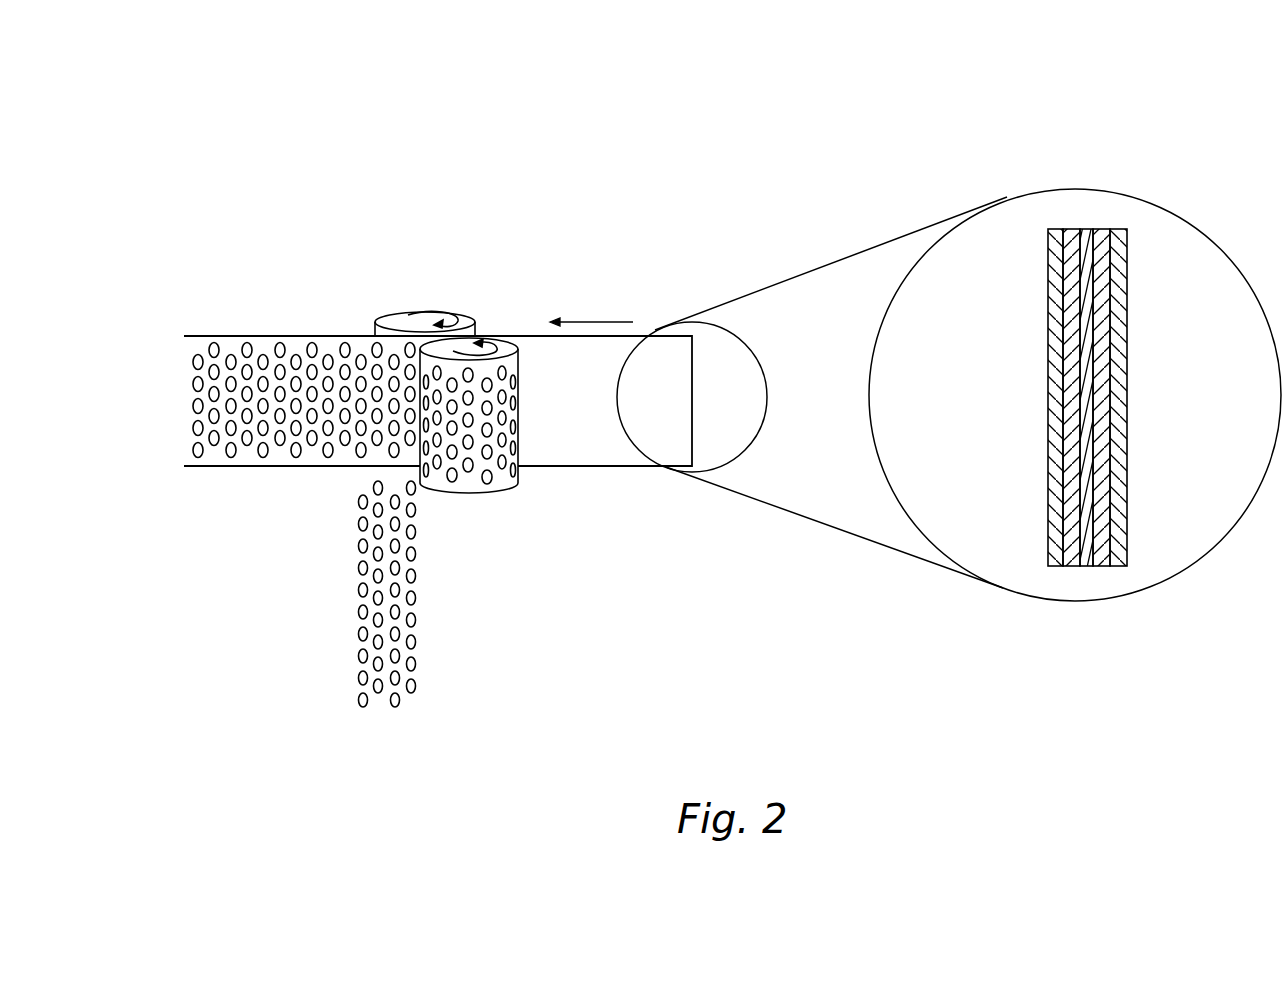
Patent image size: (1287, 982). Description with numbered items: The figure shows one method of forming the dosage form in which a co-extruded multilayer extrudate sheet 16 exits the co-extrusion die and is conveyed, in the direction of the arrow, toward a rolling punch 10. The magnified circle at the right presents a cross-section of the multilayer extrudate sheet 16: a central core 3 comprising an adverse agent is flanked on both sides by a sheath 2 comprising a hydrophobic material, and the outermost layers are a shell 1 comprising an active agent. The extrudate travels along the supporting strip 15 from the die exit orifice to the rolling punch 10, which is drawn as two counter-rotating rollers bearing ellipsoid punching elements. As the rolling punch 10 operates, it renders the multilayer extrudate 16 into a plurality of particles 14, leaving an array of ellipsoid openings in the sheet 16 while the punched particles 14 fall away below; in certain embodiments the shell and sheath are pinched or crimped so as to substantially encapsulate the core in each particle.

The shell 1 is at (1053, 228).
The sheath 2 is at (1069, 228).
The core 3 is at (1087, 228).
The rolling punch 10 is at (408, 312).
The particles 14 is at (307, 563).
The base sheet 15 is at (595, 442).
The multilayer extrudate sheet 16 is at (298, 342).